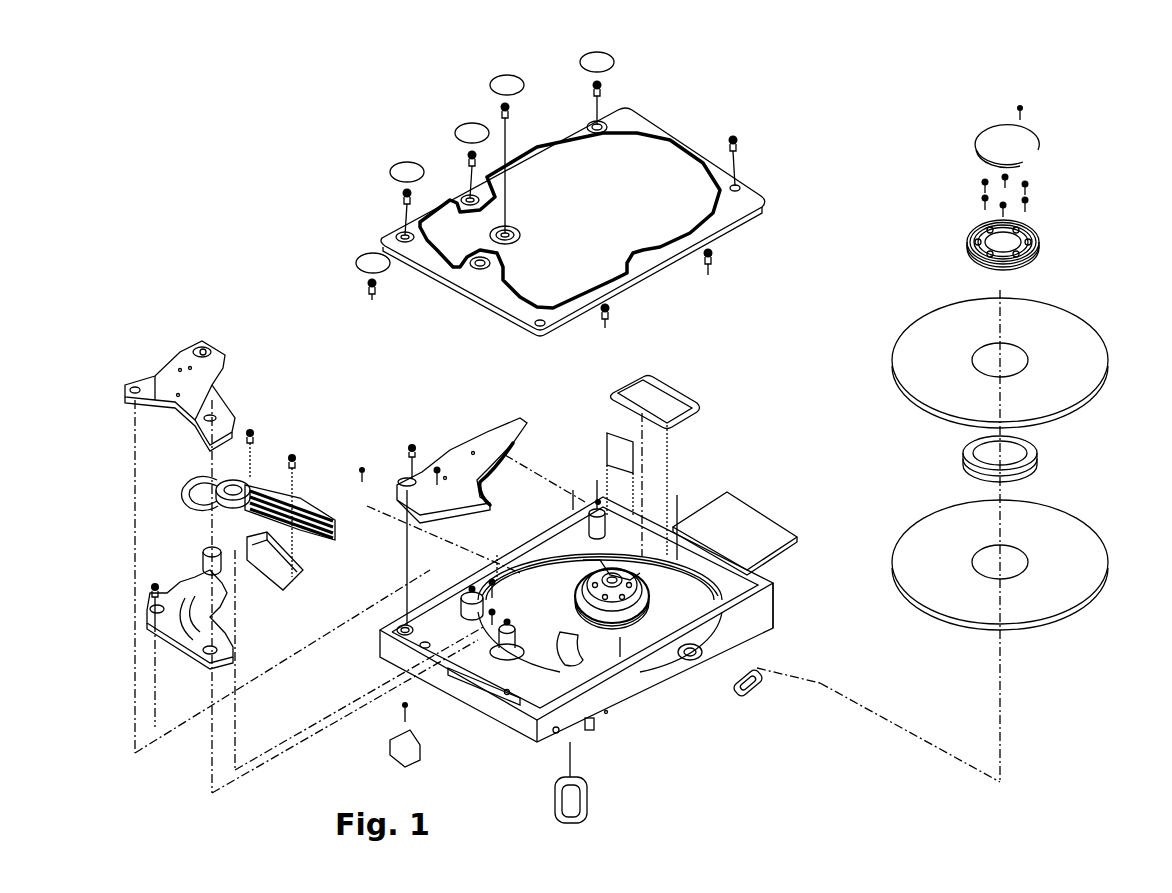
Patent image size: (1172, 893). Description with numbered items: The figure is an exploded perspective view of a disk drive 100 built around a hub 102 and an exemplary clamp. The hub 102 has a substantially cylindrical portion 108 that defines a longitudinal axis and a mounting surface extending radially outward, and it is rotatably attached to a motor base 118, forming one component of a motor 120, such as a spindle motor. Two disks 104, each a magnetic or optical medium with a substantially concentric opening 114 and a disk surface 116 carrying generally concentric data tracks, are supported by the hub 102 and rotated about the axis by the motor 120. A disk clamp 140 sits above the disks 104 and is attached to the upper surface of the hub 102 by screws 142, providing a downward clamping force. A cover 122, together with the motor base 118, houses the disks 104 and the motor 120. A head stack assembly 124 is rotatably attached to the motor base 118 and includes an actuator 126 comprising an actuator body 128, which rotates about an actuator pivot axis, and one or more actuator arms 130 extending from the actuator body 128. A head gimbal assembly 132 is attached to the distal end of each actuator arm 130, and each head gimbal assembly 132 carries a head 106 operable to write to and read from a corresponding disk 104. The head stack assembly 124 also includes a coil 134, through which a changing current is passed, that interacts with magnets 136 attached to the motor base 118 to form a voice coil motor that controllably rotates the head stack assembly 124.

The disk drive 100 is at (165, 90).
The hub 102 is at (760, 668).
The disk 104 is at (989, 454).
The head 106 is at (299, 495).
The substantially cylindrical portion 108 is at (663, 620).
The substantially concentric opening 114 is at (1020, 343).
The disk surface 116 is at (1087, 354).
The motor base 118 is at (775, 638).
The motor 120 is at (572, 520).
The cover 122 is at (758, 228).
The head stack assembly 124 is at (330, 564).
The actuator 126 is at (234, 455).
The actuator body 128 is at (254, 437).
The actuator arm 130 is at (268, 486).
The head gimbal assembly 132 is at (330, 500).
The coil 134 is at (172, 474).
The magnet 136 is at (188, 594).
The disk clamp 140 is at (967, 243).
The screw 142 is at (983, 180).